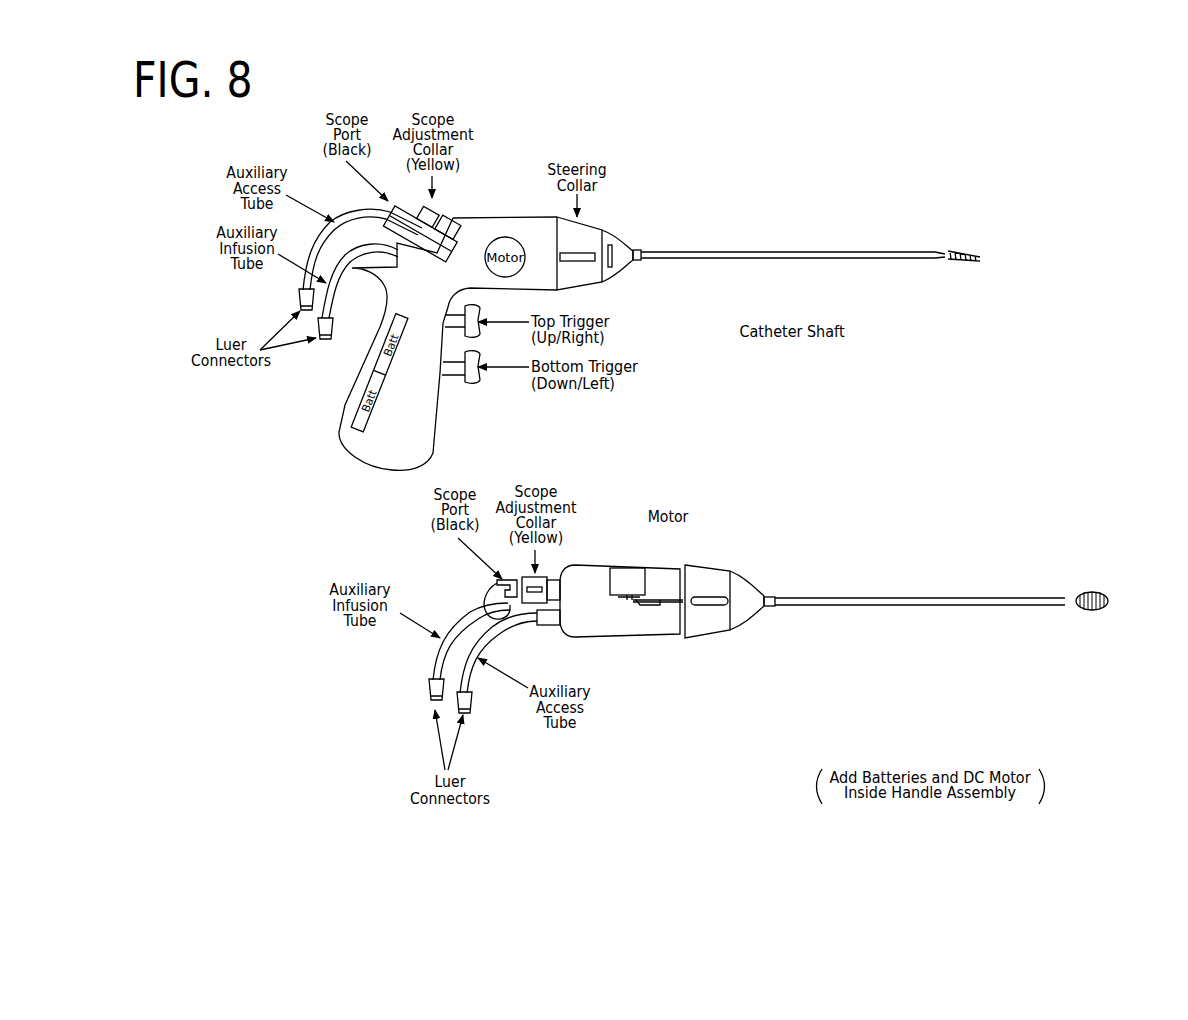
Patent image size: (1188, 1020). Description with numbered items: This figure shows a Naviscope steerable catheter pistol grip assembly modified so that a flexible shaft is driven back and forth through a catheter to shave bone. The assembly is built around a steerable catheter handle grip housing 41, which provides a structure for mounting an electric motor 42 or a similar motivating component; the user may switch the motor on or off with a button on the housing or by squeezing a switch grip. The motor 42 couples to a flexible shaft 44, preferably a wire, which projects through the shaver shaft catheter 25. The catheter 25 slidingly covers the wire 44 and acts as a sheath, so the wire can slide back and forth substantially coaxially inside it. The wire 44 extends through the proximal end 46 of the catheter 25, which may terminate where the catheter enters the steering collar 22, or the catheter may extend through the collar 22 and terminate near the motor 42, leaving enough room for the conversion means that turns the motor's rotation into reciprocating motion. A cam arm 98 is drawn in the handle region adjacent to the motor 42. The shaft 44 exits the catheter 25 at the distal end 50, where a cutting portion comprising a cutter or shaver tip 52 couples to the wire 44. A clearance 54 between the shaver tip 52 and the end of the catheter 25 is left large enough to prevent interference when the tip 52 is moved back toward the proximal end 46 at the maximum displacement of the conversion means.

The steering collar 22 is at (709, 639).
The shaver shaft catheter 25 is at (790, 262).
The steerable catheter handle grip housing 41 is at (217, 710).
The electric motor 42 is at (627, 567).
The flexible shaft 44 is at (664, 600).
The proximal end 46 is at (817, 546).
The distal end 50 is at (1037, 550).
The shaver tip 52 is at (1112, 579).
The clearance 54 is at (974, 262).
The cam arm 98 is at (629, 606).